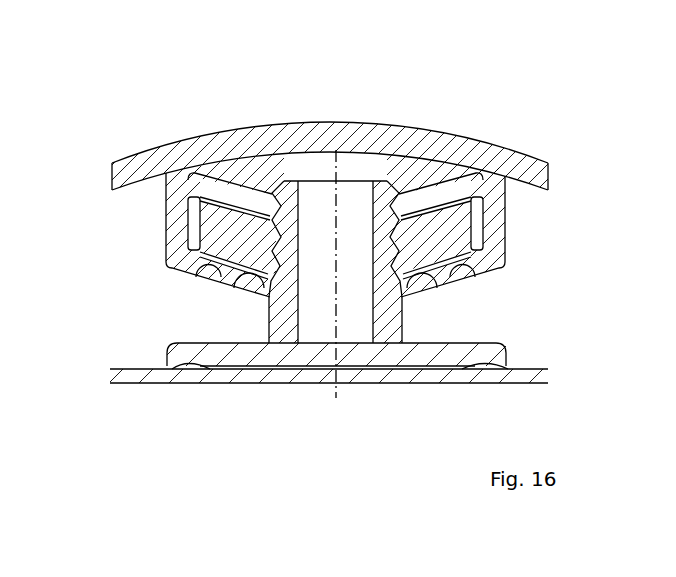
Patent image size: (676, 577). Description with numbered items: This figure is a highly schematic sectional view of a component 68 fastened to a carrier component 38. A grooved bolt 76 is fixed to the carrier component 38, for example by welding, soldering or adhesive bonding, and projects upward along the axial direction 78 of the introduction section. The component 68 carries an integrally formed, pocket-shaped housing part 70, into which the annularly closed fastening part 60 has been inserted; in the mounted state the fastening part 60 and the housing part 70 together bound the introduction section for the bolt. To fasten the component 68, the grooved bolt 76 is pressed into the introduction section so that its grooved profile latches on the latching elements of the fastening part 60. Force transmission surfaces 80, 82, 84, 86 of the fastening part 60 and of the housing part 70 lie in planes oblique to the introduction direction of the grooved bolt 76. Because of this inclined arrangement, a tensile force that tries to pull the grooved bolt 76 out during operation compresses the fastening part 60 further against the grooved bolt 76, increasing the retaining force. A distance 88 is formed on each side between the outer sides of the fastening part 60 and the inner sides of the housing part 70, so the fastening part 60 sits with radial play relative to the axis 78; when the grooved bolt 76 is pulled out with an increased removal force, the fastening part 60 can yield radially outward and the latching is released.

The carrier component 38 is at (132, 383).
The fastening part 60 is at (338, 224).
The component 68 is at (260, 136).
The housing part 70 is at (338, 250).
The grooved bolt 76 is at (394, 316).
The axial direction 78 is at (337, 400).
The force transmission surface 80 is at (215, 202).
The force transmission surface 82 is at (240, 212).
The force transmission surface 84 is at (488, 271).
The force transmission surface 86 is at (430, 267).
The distance 88 is at (196, 218).